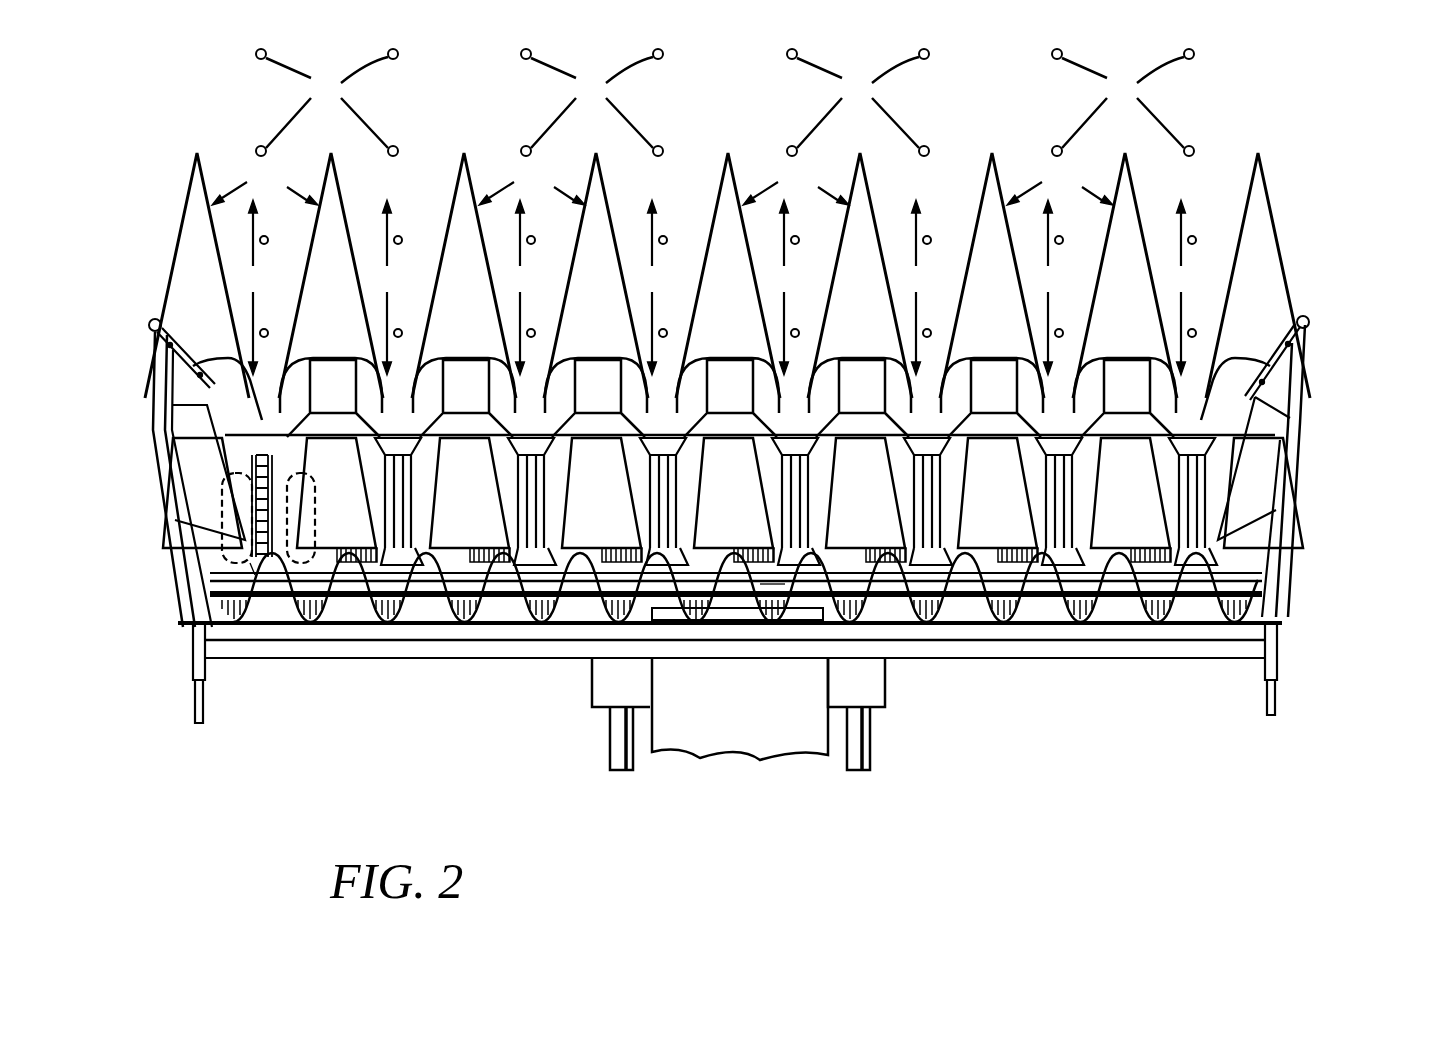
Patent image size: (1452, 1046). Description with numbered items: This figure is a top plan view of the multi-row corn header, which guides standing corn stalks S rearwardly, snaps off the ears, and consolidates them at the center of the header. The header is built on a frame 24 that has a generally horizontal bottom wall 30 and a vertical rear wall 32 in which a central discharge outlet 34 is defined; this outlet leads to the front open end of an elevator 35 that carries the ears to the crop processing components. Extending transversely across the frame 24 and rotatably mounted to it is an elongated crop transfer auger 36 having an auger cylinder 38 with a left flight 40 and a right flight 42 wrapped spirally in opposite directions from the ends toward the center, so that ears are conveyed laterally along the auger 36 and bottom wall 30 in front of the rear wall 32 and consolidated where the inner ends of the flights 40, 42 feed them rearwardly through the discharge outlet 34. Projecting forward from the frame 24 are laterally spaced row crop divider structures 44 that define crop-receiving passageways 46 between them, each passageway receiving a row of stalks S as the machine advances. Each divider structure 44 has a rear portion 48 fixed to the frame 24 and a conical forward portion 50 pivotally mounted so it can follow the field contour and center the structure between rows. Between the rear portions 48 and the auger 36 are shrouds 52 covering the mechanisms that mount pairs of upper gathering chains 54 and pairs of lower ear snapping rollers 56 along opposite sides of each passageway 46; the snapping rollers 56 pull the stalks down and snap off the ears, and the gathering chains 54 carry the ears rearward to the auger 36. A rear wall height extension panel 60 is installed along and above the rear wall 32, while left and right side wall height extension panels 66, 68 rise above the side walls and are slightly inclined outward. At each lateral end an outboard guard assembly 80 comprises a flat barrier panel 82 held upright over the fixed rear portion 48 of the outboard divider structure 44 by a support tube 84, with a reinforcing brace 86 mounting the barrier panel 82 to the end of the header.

The corn stalks S is at (725, 102).
The frame 24 is at (436, 660).
The horizontal bottom wall 30 is at (883, 605).
The vertical rear wall 32 is at (1145, 650).
The central discharge outlet 34 is at (733, 613).
The elevator 35 is at (766, 750).
The crop transfer auger 36 is at (688, 598).
The auger cylinder 38 is at (770, 585).
The left flight 40 is at (378, 628).
The right flight 42 is at (988, 600).
The row crop divider structure 44 is at (662, 185).
The crop-receiving passageway 46 is at (721, 287).
The rear portion 48 is at (348, 399).
The forward portion 50 is at (216, 313).
The shroud 52 is at (325, 533).
The upper gathering chain 54 is at (165, 489).
The lower ear snapping roller 56 is at (420, 512).
The rear wall height extension panel 60 is at (273, 563).
The left side wall height extension panel 66 is at (180, 585).
The right side wall height extension panel 68 is at (1290, 565).
The outboard guard assembly 80 is at (147, 379).
The barrier panel 82 is at (192, 436).
The support tube 84 is at (172, 343).
The reinforcing brace 86 is at (173, 510).